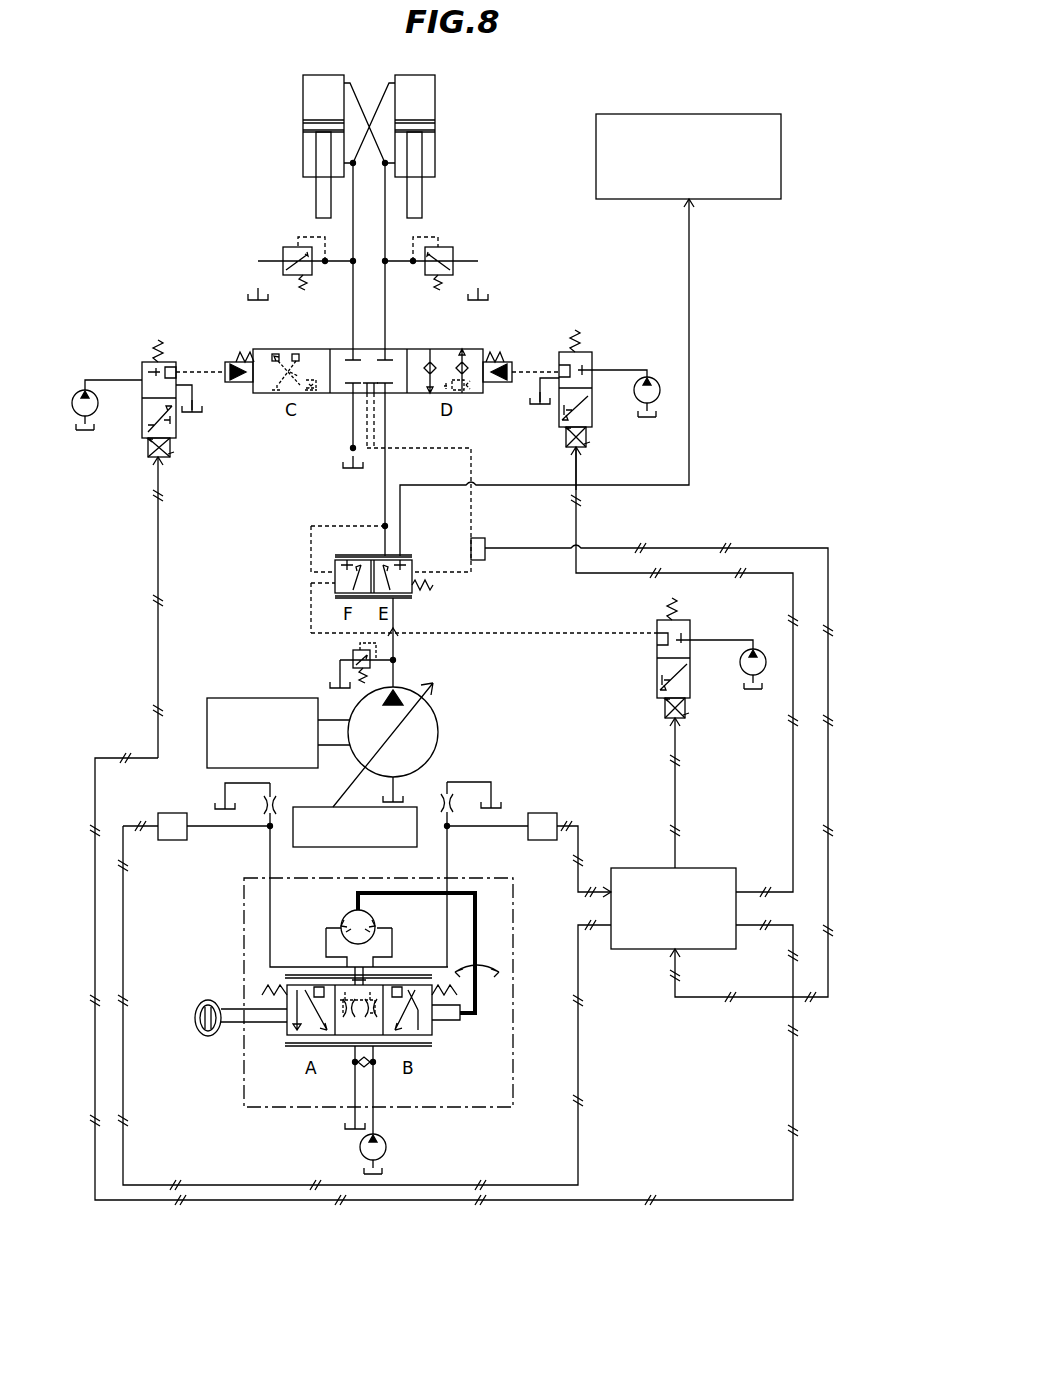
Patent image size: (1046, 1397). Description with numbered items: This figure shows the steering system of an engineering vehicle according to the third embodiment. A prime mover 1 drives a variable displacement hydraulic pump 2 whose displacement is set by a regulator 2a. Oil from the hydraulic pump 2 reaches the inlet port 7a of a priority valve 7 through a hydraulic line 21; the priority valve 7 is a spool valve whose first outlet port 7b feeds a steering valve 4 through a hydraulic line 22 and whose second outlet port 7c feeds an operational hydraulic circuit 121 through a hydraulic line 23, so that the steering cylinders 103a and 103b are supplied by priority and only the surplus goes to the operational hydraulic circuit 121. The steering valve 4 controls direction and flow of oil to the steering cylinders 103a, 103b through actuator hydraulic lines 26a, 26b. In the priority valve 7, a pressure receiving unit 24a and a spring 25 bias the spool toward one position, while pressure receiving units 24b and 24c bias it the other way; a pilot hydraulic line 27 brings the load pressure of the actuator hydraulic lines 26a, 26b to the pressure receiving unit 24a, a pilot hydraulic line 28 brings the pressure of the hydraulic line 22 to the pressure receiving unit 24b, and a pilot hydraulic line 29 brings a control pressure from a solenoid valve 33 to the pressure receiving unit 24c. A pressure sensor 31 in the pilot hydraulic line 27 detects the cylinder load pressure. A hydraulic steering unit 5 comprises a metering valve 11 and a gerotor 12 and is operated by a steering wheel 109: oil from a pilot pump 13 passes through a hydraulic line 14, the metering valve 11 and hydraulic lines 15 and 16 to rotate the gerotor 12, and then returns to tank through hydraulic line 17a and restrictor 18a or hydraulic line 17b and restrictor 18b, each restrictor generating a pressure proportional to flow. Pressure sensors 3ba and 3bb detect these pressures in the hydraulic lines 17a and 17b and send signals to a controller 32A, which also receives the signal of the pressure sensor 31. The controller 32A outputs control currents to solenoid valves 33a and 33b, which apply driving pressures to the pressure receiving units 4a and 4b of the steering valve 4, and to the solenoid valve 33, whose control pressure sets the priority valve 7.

The steering cylinder 103a is at (303, 106).
The steering cylinder 103b is at (435, 108).
The operational hydraulic circuit 121 is at (689, 114).
The solenoid valve 33a is at (169, 362).
The solenoid valve 33b is at (584, 362).
The pilot pump 13 is at (80, 390).
The actuator hydraulic line 26a is at (353, 328).
The actuator hydraulic line 26b is at (388, 329).
The steering valve 4 is at (482, 349).
The pressure receiving unit 4a is at (236, 384).
The pressure receiving unit 4b is at (496, 384).
The hydraulic line 22 is at (387, 468).
The pilot hydraulic line 27 is at (473, 455).
The hydraulic line 23 is at (627, 480).
The pilot hydraulic line 28 is at (332, 526).
The pilot hydraulic line 29 is at (508, 637).
The pressure sensor 31 is at (487, 541).
The priority valve 7 is at (366, 604).
The inlet port 7a is at (396, 603).
The first outlet port 7b is at (382, 555).
The second outlet port 7c is at (402, 556).
The pressure receiving unit 24a is at (414, 566).
The pressure receiving unit 24b is at (333, 566).
The pressure receiving unit 24c is at (333, 591).
The spring 25 is at (433, 585).
The prime mover 1 is at (263, 698).
The hydraulic pump 2 is at (439, 732).
The regulator 2a is at (332, 807).
The hydraulic line 21 is at (395, 663).
The solenoid valve 33 is at (690, 690).
The pressure sensor 3ba is at (174, 813).
The pressure sensor 3bb is at (543, 813).
The restrictor 18a is at (264, 822).
The restrictor 18b is at (453, 810).
The hydraulic line 17a is at (275, 907).
The hydraulic line 17b is at (446, 878).
The gerotor 12 is at (375, 922).
The hydraulic line 15 is at (326, 948).
The hydraulic line 16 is at (392, 948).
The steering wheel 109 is at (195, 1018).
The metering valve 11 is at (279, 1046).
The hydraulic line 14 is at (375, 1093).
The hydraulic steering unit 5 is at (513, 1080).
The controller 32A is at (716, 868).